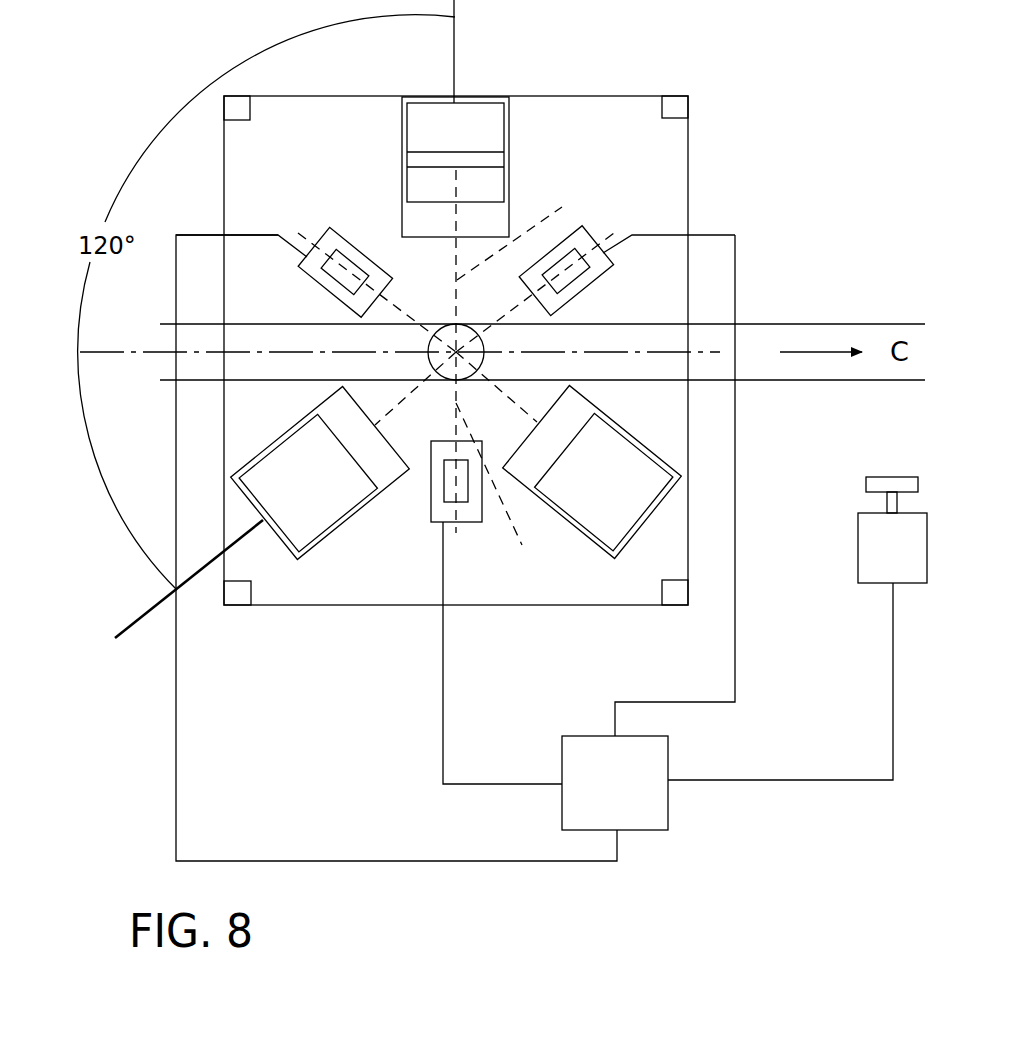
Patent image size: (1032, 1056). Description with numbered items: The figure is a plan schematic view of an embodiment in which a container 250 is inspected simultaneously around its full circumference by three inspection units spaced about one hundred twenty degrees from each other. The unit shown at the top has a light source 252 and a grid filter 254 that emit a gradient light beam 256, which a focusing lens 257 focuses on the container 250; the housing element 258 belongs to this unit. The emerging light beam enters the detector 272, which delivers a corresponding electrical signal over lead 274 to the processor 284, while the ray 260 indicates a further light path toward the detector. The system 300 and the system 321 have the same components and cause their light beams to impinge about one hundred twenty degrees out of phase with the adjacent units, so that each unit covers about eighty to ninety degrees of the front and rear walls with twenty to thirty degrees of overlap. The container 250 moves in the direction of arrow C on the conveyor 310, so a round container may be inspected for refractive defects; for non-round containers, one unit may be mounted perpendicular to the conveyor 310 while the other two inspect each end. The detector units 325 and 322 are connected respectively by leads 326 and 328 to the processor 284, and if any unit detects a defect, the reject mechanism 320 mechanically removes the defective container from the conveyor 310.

The container 250 is at (484, 350).
The light source 252 is at (483, 118).
The grid filter 254 is at (500, 157).
The gradient light beam 256 is at (535, 234).
The focusing lens 257 is at (505, 240).
The sensor housing 258 is at (413, 218).
The sensing ray 260 is at (476, 457).
The detector 272 is at (440, 497).
The lead 274 is at (443, 711).
The processor 284 is at (643, 801).
The system 300 is at (669, 503).
The conveyor 310 is at (207, 368).
The reject mechanism 320 is at (919, 564).
The system 321 is at (312, 556).
The detector unit 322 is at (597, 232).
The detector unit 325 is at (333, 297).
The lead 326 is at (242, 235).
The lead 328 is at (735, 623).